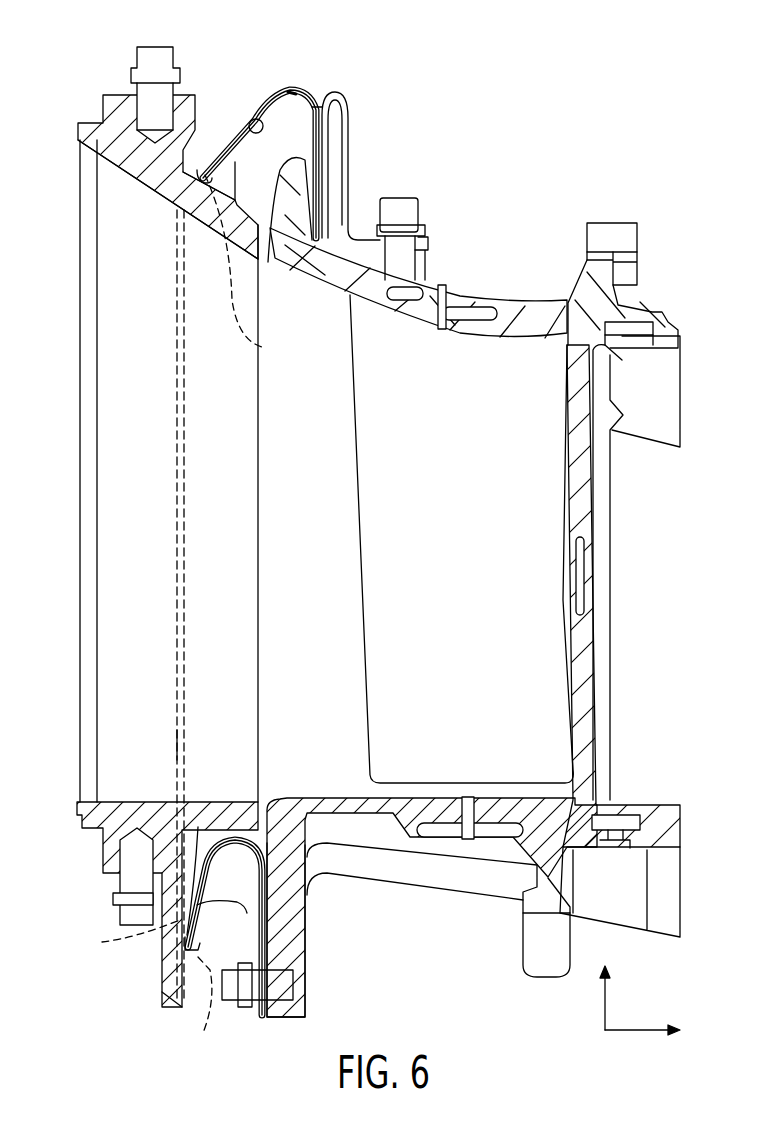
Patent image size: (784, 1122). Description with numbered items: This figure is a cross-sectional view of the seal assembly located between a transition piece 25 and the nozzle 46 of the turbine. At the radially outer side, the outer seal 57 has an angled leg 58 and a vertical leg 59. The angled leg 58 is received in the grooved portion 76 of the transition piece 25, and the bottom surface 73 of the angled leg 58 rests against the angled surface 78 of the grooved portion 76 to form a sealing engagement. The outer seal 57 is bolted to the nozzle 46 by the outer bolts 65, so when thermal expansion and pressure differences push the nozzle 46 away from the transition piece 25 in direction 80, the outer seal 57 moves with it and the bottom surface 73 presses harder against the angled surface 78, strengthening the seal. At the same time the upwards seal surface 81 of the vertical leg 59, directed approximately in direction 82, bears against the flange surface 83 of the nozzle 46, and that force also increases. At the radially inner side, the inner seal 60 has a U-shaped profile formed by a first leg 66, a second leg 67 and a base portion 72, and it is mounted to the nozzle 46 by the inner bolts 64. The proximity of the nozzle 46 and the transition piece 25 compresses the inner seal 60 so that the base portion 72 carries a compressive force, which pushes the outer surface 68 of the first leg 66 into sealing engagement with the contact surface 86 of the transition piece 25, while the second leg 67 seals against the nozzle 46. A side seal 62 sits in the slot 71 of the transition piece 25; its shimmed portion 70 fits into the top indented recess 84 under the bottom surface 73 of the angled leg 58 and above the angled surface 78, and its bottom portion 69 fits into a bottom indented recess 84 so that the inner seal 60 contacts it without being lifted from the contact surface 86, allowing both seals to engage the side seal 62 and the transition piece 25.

The transition piece 25 is at (103, 123).
The nozzle 46 is at (488, 150).
The outer seal 57 is at (300, 88).
The angled leg 58 is at (232, 155).
The vertical leg 59 is at (318, 147).
The inner seal 60 is at (227, 838).
The side seal 62 is at (176, 447).
The inner bolt 64 is at (230, 992).
The outer bolt 65 is at (393, 213).
The first leg 66 is at (203, 900).
The second leg 67 is at (267, 922).
The outer surface 68 is at (198, 827).
The bottom portion 69 is at (178, 955).
The shimmed portion 70 is at (190, 201).
The slot 71 is at (181, 740).
The base portion 72 is at (240, 843).
The bottom surface 73 is at (203, 176).
The grooved portion 76 is at (207, 148).
The angled surface 78 is at (205, 185).
The direction 80 is at (661, 1037).
The upwards seal surface 81 is at (323, 108).
The direction 82 is at (605, 981).
The flange surface 83 is at (308, 183).
The indented recess 84 is at (262, 347).
The contact surface 86 is at (198, 1013).